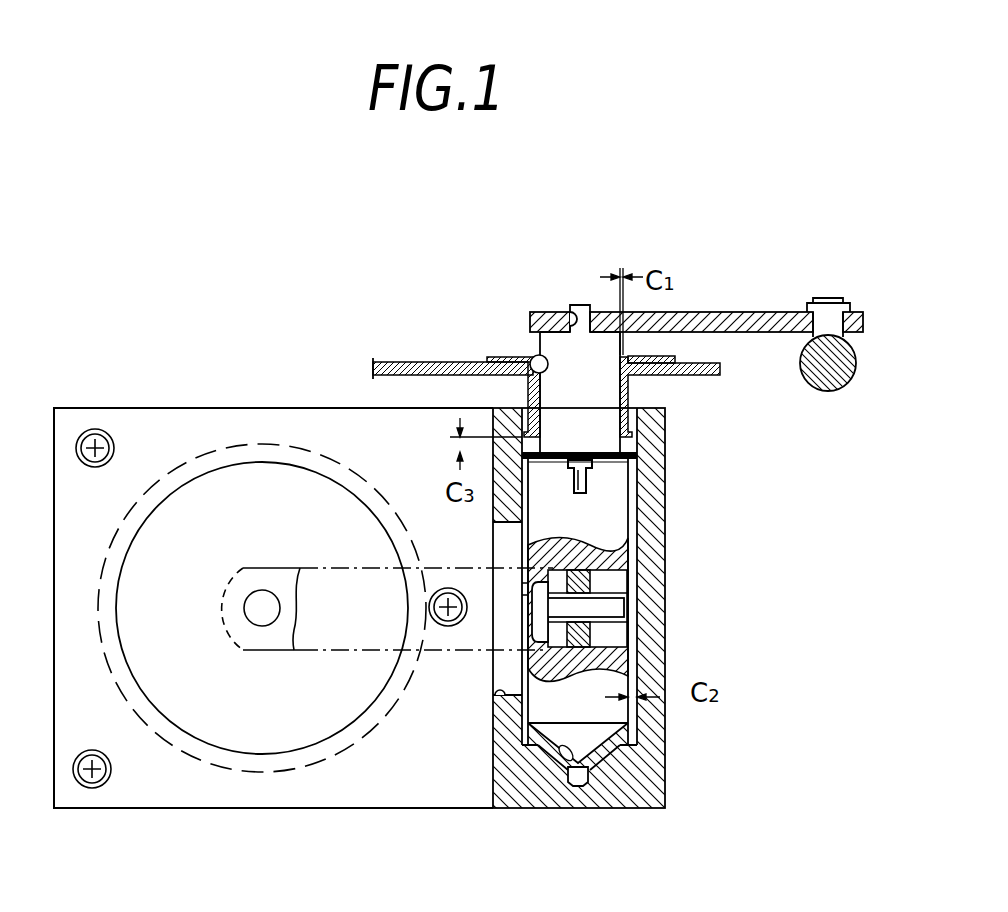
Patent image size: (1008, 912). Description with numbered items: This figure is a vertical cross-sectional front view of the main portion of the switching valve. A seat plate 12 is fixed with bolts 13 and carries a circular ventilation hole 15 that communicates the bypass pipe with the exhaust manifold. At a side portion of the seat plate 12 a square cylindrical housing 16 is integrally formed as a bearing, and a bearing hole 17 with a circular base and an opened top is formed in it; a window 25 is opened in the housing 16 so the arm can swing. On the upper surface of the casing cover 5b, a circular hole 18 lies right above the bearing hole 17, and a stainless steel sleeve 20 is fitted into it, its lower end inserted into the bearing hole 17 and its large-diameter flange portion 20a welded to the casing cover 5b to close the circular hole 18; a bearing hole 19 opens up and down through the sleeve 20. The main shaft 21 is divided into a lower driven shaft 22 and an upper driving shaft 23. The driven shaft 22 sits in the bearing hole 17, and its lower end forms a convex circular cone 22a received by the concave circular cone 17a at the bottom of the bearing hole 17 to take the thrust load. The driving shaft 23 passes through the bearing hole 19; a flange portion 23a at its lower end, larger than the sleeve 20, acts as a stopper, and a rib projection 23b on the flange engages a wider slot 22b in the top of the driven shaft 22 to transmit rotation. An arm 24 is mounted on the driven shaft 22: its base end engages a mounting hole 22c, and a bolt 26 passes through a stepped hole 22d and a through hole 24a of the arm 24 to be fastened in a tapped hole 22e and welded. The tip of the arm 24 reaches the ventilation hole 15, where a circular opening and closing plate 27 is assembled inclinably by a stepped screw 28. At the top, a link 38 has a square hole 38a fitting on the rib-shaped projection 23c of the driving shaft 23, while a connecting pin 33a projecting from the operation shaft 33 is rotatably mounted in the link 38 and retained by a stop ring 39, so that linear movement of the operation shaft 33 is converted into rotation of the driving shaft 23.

The seat plate 12 is at (108, 810).
The bolts 13 is at (113, 440).
The ventilation hole 15 is at (236, 468).
The housing 16 is at (663, 703).
The bearing hole 17 is at (652, 747).
The concave circular cone 17a is at (580, 787).
The circular hole 18 is at (640, 376).
The bearing hole 19 is at (532, 358).
The sleeve 20 is at (533, 394).
The flange portion 20a is at (662, 357).
The main shaft 21 is at (637, 477).
The driven shaft 22 is at (640, 512).
The convex circular cone 22a is at (540, 746).
The slot 22b is at (628, 490).
The mounting hole 22c is at (592, 586).
The stepped hole 22d is at (532, 588).
The tapped hole 22e is at (548, 604).
The driving shaft 23 is at (648, 413).
The flange portion 23a is at (600, 460).
The rib projection 23b is at (585, 493).
The rib-shaped projection 23c is at (583, 305).
The arm 24 is at (300, 568).
The through hole 24a is at (618, 614).
The window 25 is at (497, 693).
The bolt 26 is at (527, 589).
The opening and closing plate 27 is at (253, 771).
The stepped screw 28 is at (262, 626).
The operation shaft 33 is at (848, 384).
The connecting pin 33a is at (835, 298).
The link 38 is at (770, 312).
The square hole 38a is at (568, 317).
The stop ring 39 is at (850, 303).
The casing cover 5b is at (412, 362).